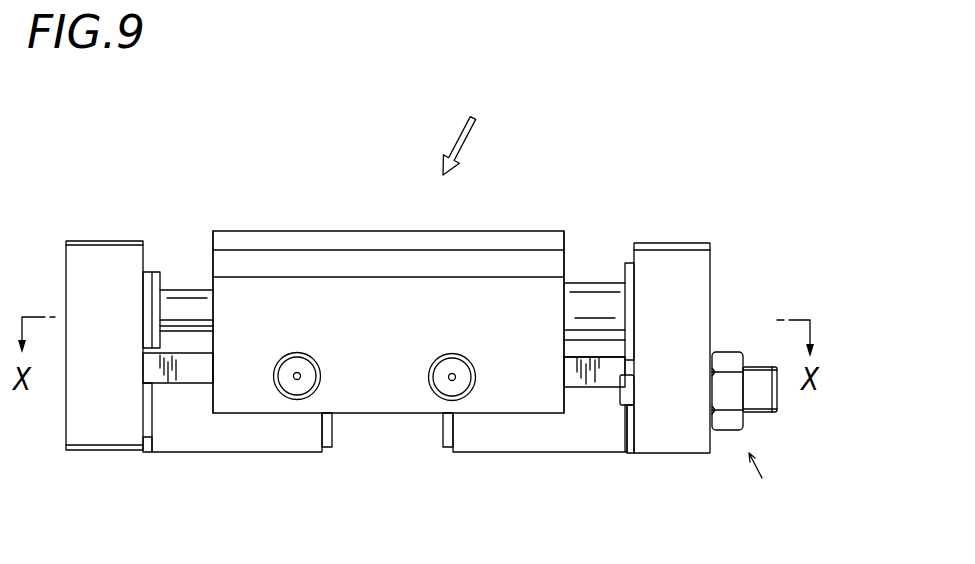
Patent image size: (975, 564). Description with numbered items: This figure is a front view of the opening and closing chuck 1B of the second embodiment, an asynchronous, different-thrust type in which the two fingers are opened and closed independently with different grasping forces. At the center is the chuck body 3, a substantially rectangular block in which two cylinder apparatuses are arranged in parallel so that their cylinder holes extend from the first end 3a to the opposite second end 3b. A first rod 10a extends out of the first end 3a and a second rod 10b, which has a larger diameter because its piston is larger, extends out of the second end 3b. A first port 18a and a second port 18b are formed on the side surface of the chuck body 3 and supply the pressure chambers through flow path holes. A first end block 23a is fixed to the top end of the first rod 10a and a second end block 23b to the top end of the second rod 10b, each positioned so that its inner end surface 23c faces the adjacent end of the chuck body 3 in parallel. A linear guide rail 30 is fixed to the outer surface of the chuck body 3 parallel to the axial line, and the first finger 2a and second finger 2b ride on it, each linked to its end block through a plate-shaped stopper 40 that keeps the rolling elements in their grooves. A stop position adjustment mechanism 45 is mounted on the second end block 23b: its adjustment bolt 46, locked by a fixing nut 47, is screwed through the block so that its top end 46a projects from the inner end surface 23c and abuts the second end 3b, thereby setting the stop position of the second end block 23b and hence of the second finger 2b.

The opening and closing chuck 1B is at (464, 126).
The chuck body 3 is at (340, 242).
The first end of the chuck body 3a is at (207, 250).
The second end of the chuck body 3b is at (567, 262).
The first rod 10a is at (168, 308).
The second rod 10b is at (600, 303).
The first port 18a is at (292, 380).
The second port 18b is at (440, 380).
The first end block 23a is at (86, 258).
The second end block 23b is at (686, 268).
The inner end surface 23c is at (632, 420).
The first finger 2a is at (211, 432).
The second finger 2b is at (495, 440).
The guide rail 30 is at (184, 375).
The stopper 40 is at (147, 440).
The stop position adjustment mechanism 45 is at (777, 496).
The adjustment bolt 46 is at (758, 402).
The top end of the adjustment bolt 46a is at (622, 392).
The fixing nut 47 is at (729, 420).